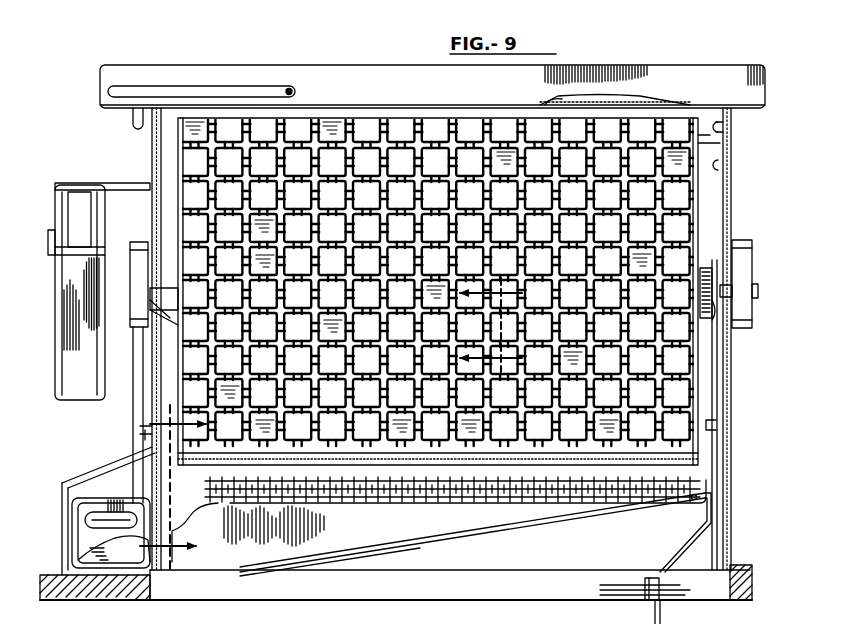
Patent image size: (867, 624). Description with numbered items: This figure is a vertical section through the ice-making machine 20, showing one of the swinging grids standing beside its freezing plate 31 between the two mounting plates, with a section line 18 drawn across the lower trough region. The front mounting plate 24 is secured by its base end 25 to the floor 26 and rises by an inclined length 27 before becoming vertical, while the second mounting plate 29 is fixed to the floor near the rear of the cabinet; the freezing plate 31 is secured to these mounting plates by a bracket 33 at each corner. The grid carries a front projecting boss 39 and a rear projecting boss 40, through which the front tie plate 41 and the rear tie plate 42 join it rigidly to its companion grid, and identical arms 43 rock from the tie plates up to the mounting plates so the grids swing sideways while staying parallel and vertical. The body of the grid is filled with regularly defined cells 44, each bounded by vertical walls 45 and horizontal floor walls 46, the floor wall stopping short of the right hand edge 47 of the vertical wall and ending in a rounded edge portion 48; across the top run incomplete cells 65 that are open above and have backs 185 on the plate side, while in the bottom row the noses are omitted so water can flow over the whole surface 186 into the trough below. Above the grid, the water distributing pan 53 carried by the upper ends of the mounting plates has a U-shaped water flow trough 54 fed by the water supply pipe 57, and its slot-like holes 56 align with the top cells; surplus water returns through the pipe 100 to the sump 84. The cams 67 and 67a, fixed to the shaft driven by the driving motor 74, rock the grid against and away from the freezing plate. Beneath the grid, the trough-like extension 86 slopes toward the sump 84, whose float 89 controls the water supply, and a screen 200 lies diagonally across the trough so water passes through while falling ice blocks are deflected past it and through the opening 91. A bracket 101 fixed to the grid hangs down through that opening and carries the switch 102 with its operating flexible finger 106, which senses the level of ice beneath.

The section line 18 is at (190, 487).
The machine 20 is at (505, 325).
The mounting plate 24 is at (150, 148).
The base end 25 is at (62, 522).
The floor 26 is at (582, 572).
The inclined length 27 is at (92, 470).
The second mounting plate 29 is at (728, 140).
The freezing plate 31 is at (205, 362).
The bracket 33 is at (725, 125).
The projecting boss 39 is at (168, 313).
The projecting boss 40 is at (705, 268).
The tie plate 41 is at (170, 296).
The tie plate 42 is at (713, 315).
The arm 43 is at (152, 178).
The cell 44 is at (462, 140).
The vertical wall 45 is at (670, 360).
The floor wall 46 is at (668, 372).
The right hand edge 47 is at (347, 128).
The rounded edge portion 48 is at (402, 128).
The water distributing pan 53 is at (634, 63).
The water flow trough 54 is at (655, 99).
The hole 56 is at (556, 100).
The water supply pipe 57 is at (251, 97).
The incomplete cell 65 is at (300, 128).
The cam 67 is at (138, 258).
The cam 67a is at (740, 285).
The driving motor 74 is at (62, 302).
The sump 84 is at (152, 565).
The trough-like extension 86 is at (534, 517).
The float 89 is at (95, 512).
The opening 91 is at (264, 586).
The pipe 100 is at (133, 125).
The bracket 101 is at (676, 554).
The switch 102 is at (648, 590).
The operating flexible finger 106 is at (661, 620).
The back 185 is at (368, 132).
The surface 186 is at (670, 447).
The screen 200 is at (394, 500).